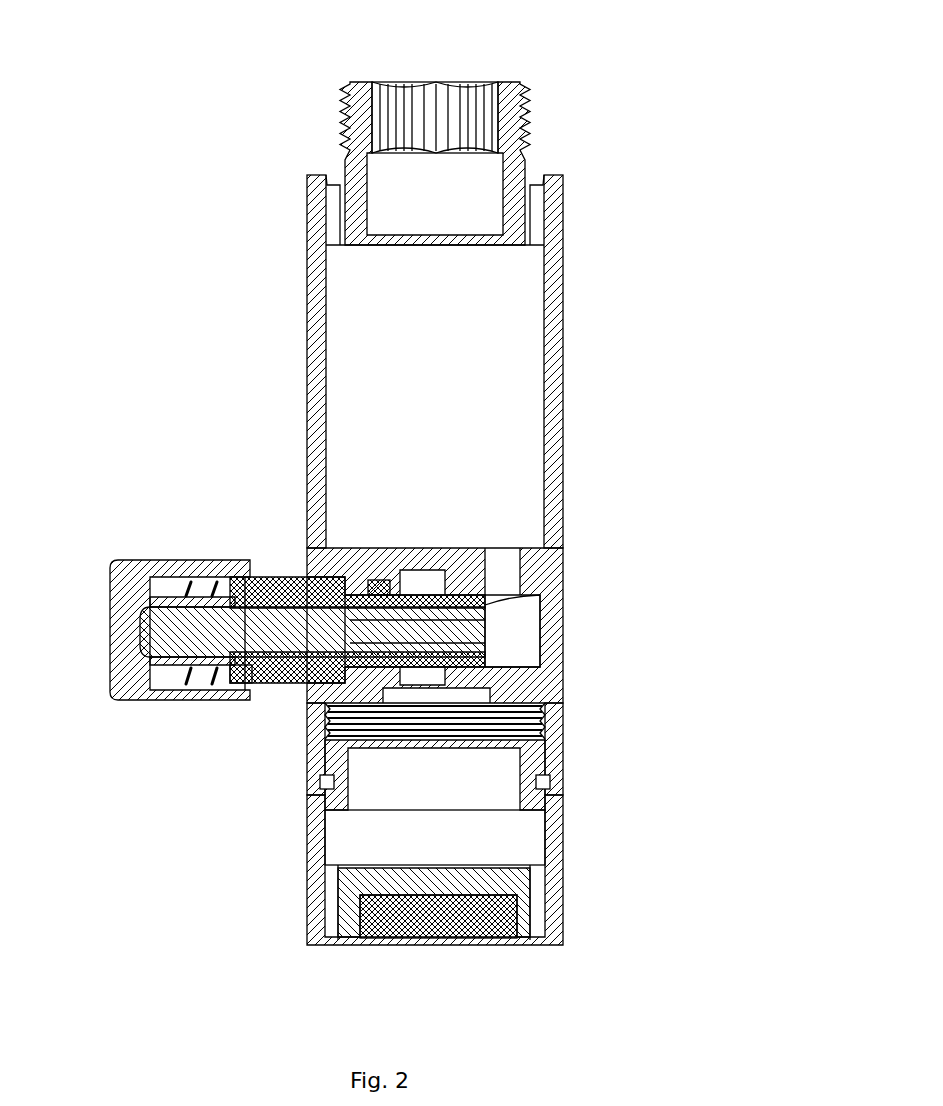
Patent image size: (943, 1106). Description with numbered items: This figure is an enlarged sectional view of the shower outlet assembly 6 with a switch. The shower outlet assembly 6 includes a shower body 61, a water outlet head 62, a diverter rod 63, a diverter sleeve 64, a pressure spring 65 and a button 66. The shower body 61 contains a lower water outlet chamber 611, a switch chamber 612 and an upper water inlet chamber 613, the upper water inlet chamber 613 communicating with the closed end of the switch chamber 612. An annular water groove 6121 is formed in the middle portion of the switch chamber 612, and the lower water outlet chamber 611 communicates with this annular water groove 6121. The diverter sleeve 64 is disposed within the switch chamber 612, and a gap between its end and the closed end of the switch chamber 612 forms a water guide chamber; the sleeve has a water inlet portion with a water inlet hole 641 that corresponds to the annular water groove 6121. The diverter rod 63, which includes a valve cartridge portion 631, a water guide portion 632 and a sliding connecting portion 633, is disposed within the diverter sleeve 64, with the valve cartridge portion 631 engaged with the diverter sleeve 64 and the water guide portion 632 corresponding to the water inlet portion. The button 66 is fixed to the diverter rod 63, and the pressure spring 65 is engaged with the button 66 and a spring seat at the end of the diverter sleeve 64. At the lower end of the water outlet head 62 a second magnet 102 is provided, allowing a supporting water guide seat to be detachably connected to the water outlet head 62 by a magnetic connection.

The shower outlet assembly 6 is at (622, 535).
The shower body 61 is at (562, 445).
The lower water outlet chamber 611 is at (560, 770).
The switch chamber 612 is at (507, 650).
The annular water groove 6121 is at (442, 548).
The upper water inlet chamber 613 is at (485, 335).
The water outlet head 62 is at (520, 848).
The diverter rod 63 is at (292, 683).
The valve cartridge portion 631 is at (490, 637).
The water guide portion 632 is at (375, 578).
The sliding connecting portion 633 is at (227, 673).
The diverter sleeve 64 is at (305, 575).
The water inlet hole 641 is at (548, 738).
The pressure spring 65 is at (200, 590).
The button 66 is at (118, 602).
The second magnet 102 is at (437, 935).